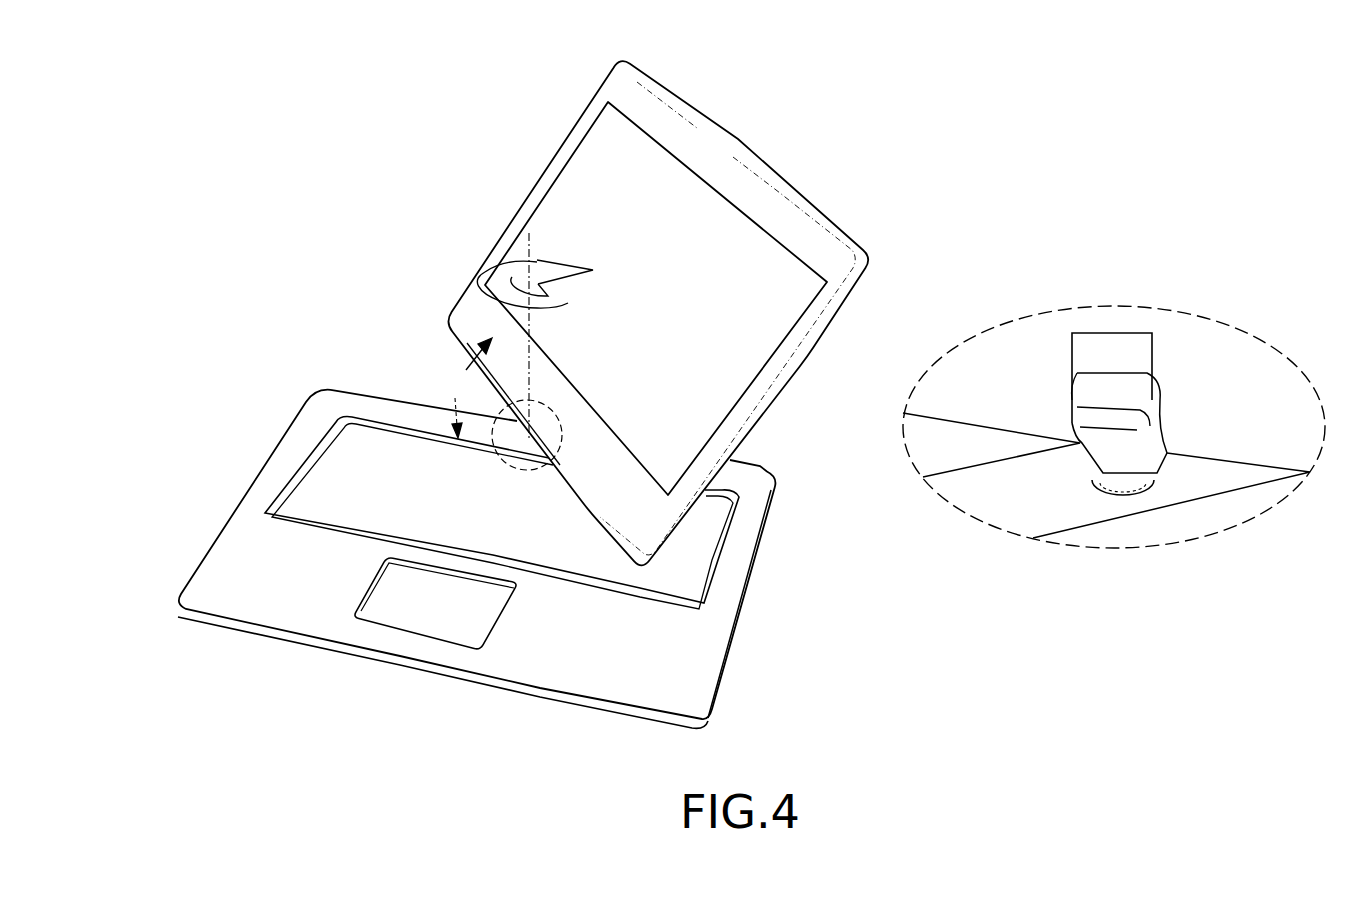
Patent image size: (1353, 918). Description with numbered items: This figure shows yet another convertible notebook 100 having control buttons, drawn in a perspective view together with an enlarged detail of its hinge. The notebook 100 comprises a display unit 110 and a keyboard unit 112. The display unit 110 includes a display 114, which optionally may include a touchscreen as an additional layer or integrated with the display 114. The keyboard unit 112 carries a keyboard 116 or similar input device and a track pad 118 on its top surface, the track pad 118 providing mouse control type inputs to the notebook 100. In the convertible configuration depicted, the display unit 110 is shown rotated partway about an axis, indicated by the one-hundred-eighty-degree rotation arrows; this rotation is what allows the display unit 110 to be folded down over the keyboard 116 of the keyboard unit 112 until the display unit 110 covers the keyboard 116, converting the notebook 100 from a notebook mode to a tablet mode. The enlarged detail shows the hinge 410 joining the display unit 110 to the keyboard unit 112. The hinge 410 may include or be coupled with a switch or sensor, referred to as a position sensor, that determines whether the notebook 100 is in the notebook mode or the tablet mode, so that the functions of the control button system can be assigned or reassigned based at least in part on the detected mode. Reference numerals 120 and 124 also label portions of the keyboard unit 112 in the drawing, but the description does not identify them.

The notebook 100 is at (406, 168).
The display unit 110 is at (577, 118).
The keyboard unit 112 is at (728, 668).
The display 114 is at (633, 172).
The keyboard 116 is at (340, 455).
The track pad 118 is at (446, 624).
The front edge of base 120 is at (380, 655).
The side surface of base 124 is at (210, 618).
The hinge 410 is at (1090, 455).